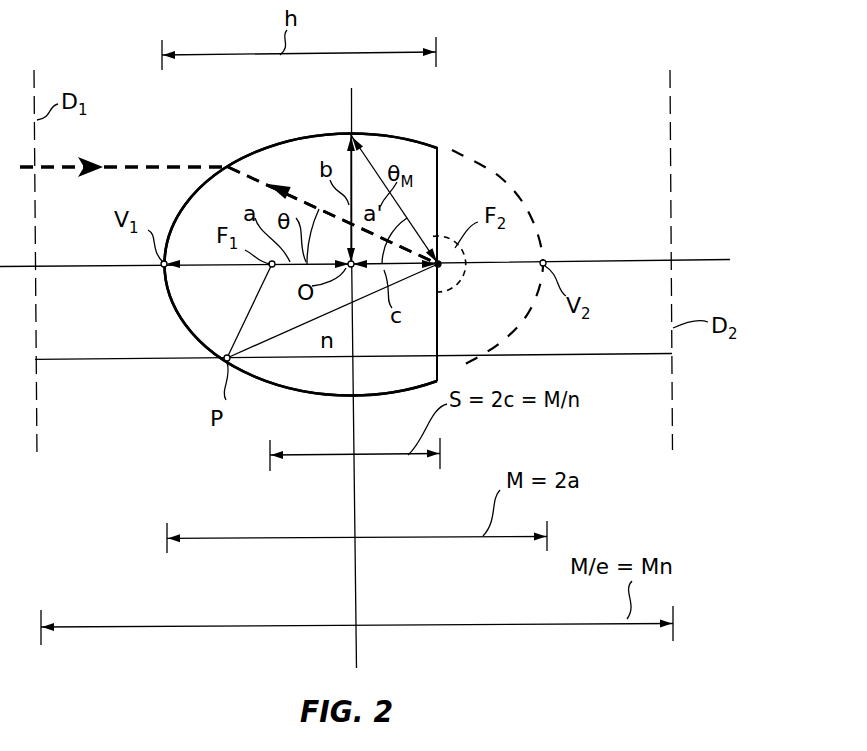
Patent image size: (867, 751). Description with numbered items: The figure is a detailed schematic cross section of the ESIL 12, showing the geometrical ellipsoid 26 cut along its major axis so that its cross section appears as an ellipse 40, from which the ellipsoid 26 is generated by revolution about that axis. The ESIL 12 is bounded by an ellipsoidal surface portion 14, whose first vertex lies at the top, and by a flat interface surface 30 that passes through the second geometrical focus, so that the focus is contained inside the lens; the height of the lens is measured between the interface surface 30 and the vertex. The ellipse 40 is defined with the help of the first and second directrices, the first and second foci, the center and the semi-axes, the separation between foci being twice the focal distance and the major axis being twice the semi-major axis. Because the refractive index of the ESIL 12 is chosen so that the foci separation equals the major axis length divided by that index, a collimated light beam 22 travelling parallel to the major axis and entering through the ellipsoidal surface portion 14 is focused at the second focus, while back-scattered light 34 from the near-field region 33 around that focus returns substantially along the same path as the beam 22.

The ESIL 12 is at (231, 329).
The ellipsoidal surface portion 14 is at (283, 143).
The collimated light beam 22 is at (160, 163).
The back-scattered light 34 is at (229, 215).
The ellipsoid 26 is at (512, 128).
The flat interface surface 30 is at (437, 200).
The near-field region 33 is at (462, 280).
The ellipse 40 is at (436, 109).